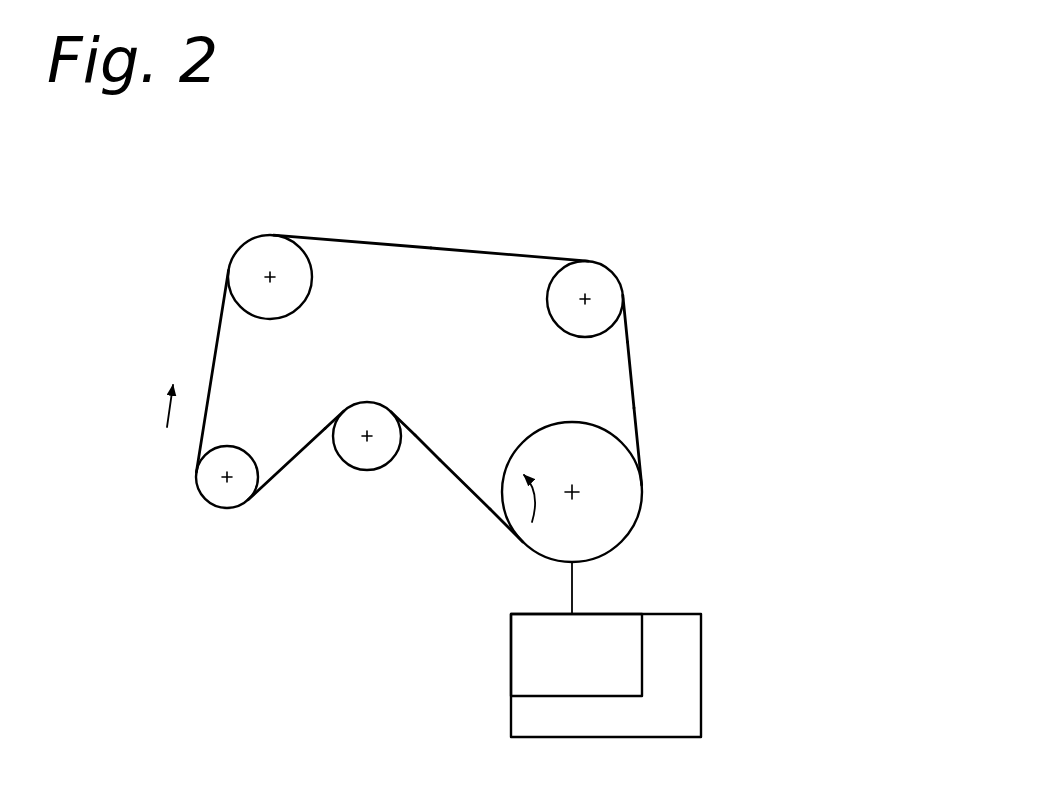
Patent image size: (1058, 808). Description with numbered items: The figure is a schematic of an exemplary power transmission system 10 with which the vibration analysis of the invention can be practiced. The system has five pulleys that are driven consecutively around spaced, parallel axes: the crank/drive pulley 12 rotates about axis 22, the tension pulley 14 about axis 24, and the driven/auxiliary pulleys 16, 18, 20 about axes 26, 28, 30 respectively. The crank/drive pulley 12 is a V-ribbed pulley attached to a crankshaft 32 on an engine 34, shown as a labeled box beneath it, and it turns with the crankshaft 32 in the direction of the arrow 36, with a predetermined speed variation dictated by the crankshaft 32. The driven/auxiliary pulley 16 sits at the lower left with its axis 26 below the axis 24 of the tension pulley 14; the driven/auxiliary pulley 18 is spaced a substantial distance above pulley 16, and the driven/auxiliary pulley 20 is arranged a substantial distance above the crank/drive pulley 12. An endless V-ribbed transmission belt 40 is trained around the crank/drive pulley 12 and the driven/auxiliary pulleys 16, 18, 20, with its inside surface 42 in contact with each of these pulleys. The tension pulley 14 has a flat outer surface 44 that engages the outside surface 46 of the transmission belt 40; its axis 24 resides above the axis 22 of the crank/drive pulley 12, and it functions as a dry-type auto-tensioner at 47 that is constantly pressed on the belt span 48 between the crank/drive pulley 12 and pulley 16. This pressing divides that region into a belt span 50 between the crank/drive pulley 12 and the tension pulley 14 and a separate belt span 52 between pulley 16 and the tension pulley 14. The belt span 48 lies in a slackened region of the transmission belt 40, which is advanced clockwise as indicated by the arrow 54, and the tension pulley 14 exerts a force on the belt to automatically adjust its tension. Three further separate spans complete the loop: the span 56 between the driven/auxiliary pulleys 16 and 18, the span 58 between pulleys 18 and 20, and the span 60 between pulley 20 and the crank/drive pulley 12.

The power transmission system 10 is at (678, 170).
The crank/drive pulley 12 is at (603, 512).
The tension pulley 14 is at (390, 447).
The driven/auxiliary pulley 16 is at (217, 500).
The driven/auxiliary pulley 18 is at (248, 258).
The driven/auxiliary pulley 20 is at (592, 280).
The axis 22 is at (570, 490).
The axis 24 is at (368, 433).
The axis 26 is at (228, 477).
The axis 28 is at (270, 277).
The axis 30 is at (585, 299).
The crankshaft 32 is at (557, 690).
The engine 34 is at (653, 729).
The arrow 36 is at (518, 528).
The transmission belt 40 is at (418, 247).
The inside surface 42 is at (627, 341).
The flat outer surface 44 is at (352, 402).
The outside surface 46 is at (640, 450).
The dry-type auto-tensioner 47 is at (410, 400).
The belt span 48 is at (435, 445).
The belt span 50 is at (450, 472).
The belt span 52 is at (312, 440).
The arrow 54 is at (167, 408).
The belt span 56 is at (217, 333).
The belt span 58 is at (543, 255).
The belt span 60 is at (633, 355).